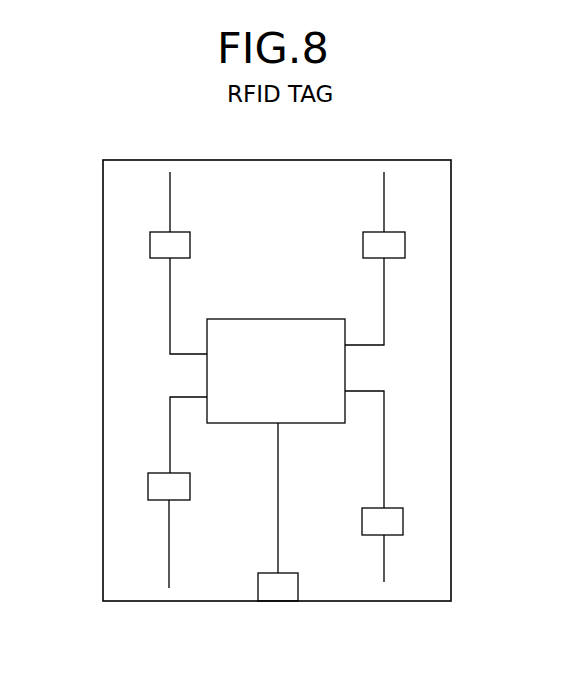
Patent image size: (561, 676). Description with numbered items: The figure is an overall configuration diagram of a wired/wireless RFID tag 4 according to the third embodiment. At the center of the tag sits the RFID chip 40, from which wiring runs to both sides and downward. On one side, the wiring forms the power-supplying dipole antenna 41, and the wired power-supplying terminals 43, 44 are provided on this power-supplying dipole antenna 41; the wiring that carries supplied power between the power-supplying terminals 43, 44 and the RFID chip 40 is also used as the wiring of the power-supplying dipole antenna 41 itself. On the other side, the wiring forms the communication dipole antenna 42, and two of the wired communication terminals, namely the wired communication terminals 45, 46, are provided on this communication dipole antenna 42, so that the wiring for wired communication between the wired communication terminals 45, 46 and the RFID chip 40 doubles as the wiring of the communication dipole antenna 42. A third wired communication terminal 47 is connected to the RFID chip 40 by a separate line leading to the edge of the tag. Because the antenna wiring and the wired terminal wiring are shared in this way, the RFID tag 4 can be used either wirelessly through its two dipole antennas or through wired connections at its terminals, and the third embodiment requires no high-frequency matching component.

The RFID tag 4 is at (280, 159).
The RFID chip 40 is at (316, 425).
The power-supplying dipole antenna 41 is at (392, 368).
The communication dipole antenna 42 is at (152, 376).
The wired power-supplying terminal 43 is at (395, 237).
The wired power-supplying terminal 44 is at (372, 520).
The wired communication terminal 45 is at (183, 237).
The wired communication terminal 46 is at (183, 503).
The wired communication terminal 47 is at (280, 604).